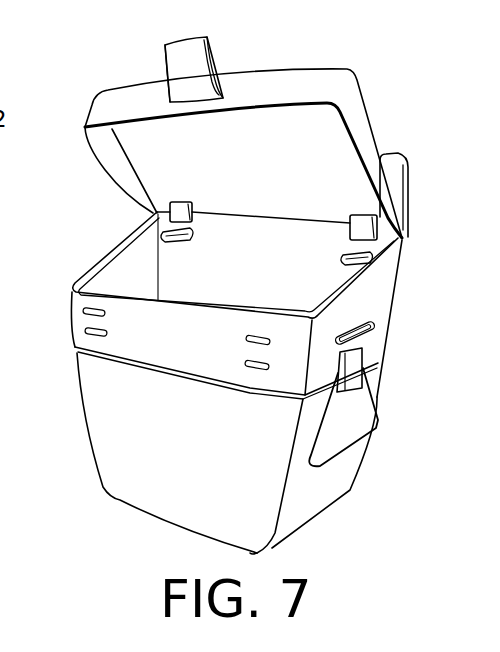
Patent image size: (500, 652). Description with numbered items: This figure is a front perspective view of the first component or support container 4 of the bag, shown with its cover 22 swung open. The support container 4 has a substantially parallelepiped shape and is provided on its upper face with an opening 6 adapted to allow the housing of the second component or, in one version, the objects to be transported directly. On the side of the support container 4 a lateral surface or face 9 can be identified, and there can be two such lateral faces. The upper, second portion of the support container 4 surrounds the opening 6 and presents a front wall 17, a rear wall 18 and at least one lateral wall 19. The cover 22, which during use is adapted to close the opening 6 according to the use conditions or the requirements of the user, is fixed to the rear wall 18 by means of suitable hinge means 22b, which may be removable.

The first component or support container 4 is at (351, 525).
The opening 6 is at (148, 287).
The lateral surface or face 9 is at (350, 467).
The front wall 17 is at (80, 322).
The rear wall 18 is at (413, 182).
The lateral wall 19 is at (375, 310).
The cover 22 is at (322, 80).
The hinge means 22b is at (402, 243).